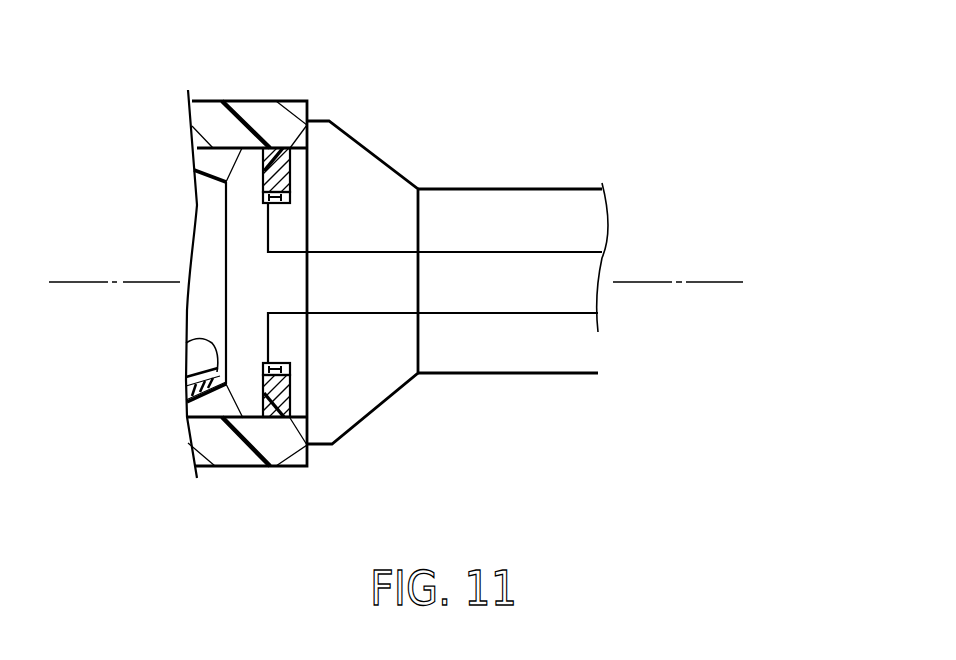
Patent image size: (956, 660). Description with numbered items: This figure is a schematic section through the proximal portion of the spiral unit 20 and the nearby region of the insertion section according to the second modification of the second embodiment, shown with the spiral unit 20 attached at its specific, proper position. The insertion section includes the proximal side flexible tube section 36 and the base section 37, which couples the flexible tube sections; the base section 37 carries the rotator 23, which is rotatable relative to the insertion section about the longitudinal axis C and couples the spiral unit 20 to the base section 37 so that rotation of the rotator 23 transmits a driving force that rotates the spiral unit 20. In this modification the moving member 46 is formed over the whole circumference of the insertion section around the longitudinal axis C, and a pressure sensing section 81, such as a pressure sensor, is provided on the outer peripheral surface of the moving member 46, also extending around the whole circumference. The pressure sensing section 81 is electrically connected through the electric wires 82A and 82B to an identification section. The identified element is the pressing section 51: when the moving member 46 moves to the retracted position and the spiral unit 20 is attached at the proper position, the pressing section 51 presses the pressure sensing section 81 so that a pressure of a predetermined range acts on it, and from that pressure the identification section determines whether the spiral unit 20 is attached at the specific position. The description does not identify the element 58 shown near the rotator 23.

The spiral unit 20 is at (219, 480).
The rotator 23 is at (198, 362).
The seal member 58 is at (192, 390).
The pressing section 51 is at (265, 148).
The moving member 46 is at (280, 418).
The pressure sensing section 81 is at (300, 440).
The base section 37 is at (362, 175).
The proximal side flexible tube section 36 is at (465, 373).
The electric wire 82A is at (482, 252).
The electric wire 82B is at (548, 313).
The longitudinal axis C is at (700, 283).